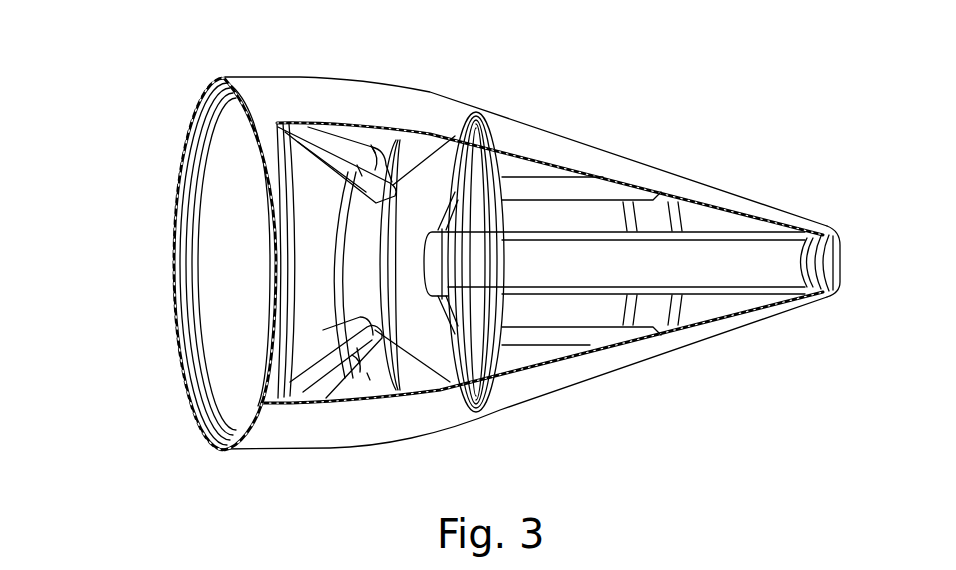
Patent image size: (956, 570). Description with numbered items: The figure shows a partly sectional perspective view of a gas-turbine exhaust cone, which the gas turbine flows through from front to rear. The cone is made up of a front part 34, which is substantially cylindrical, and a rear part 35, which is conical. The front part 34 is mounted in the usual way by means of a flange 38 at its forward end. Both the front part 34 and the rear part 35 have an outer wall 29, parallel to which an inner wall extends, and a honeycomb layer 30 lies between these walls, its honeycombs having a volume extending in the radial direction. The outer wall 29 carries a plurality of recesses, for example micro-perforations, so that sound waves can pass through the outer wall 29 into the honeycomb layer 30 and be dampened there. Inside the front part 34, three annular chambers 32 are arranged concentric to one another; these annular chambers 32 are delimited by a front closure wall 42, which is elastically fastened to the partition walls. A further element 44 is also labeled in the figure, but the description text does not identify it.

The outer wall 29 is at (610, 167).
The honeycomb layer 30 is at (767, 218).
The annular chambers 32 is at (597, 310).
The front part 34 is at (160, 241).
The rear part 35 is at (782, 322).
The flange 38 is at (173, 318).
The front closure wall 42 is at (430, 138).
The hub disc 44 is at (440, 185).